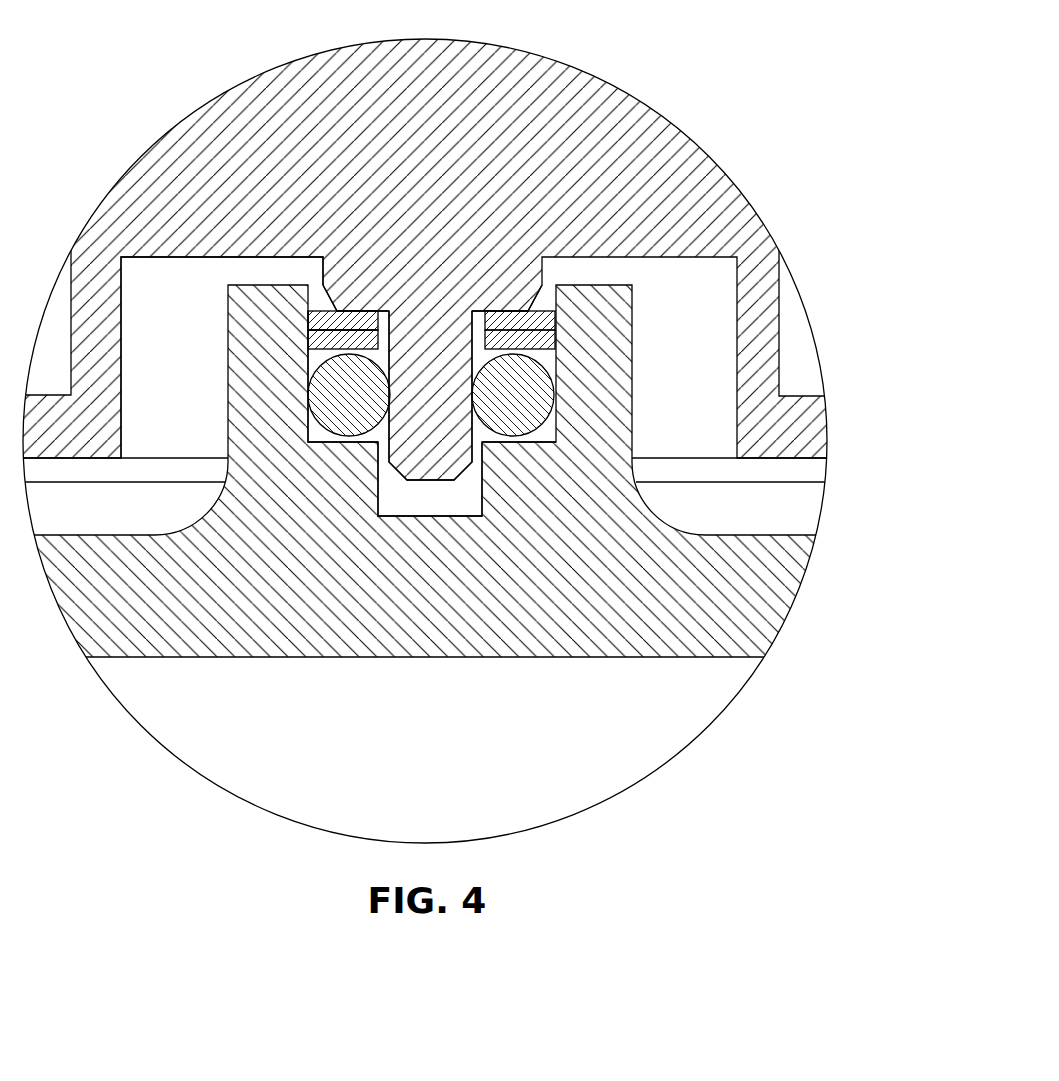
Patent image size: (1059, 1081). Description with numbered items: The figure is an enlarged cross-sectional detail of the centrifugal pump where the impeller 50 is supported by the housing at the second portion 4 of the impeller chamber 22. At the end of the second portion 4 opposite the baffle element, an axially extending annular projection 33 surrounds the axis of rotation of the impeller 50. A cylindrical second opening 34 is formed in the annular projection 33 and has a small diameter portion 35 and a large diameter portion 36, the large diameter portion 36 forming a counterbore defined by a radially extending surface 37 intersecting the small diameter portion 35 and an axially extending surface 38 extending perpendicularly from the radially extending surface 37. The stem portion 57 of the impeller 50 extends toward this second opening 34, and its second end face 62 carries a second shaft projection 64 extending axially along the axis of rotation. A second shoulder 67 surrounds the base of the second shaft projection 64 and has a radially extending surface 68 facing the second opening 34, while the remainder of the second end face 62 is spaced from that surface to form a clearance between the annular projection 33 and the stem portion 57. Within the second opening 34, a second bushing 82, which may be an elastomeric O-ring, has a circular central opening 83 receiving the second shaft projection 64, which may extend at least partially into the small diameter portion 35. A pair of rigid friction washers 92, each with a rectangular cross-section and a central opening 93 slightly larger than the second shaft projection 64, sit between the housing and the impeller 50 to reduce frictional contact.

The impeller 50 is at (529, 240).
The stem portion 57 is at (217, 157).
The second end face 62 is at (212, 258).
The friction washer 92 is at (370, 311).
The central opening 93 is at (382, 316).
The radially extending surface 37 is at (496, 347).
The axially extending surface 38 is at (530, 342).
The second opening 34 is at (548, 297).
The annular projection 33 is at (598, 284).
The second portion 4 is at (845, 450).
The impeller chamber 22 is at (776, 499).
The second shoulder 67 is at (334, 321).
The radially extending surface 68 is at (348, 330).
The second bushing 82 is at (350, 408).
The central opening 83 is at (352, 316).
The second shaft projection 64 is at (428, 472).
The small diameter portion 35 is at (462, 517).
The large diameter portion 36 is at (541, 451).